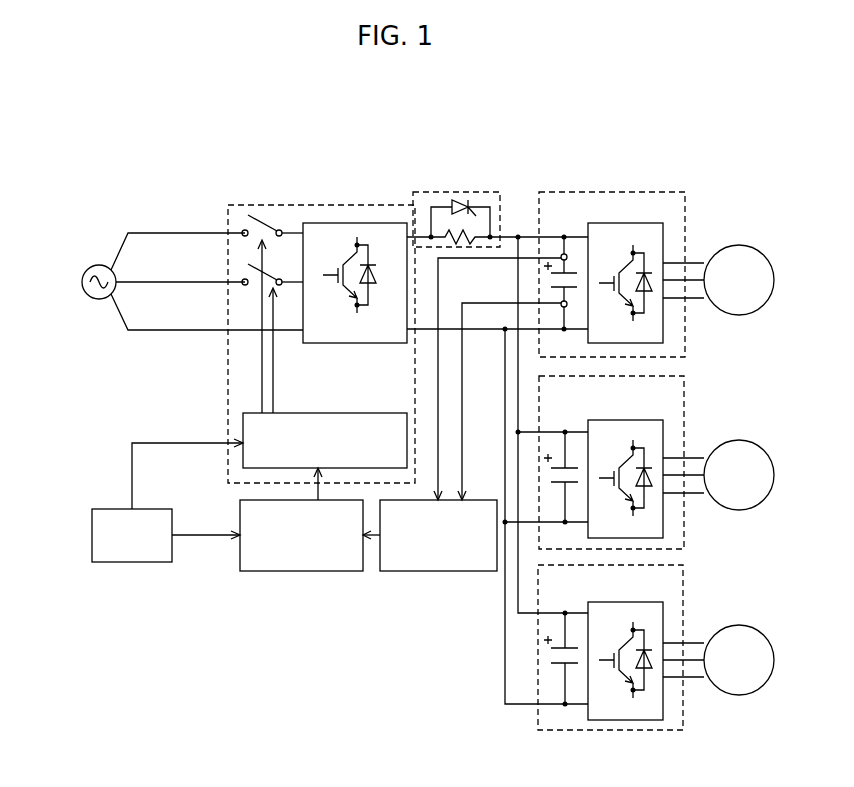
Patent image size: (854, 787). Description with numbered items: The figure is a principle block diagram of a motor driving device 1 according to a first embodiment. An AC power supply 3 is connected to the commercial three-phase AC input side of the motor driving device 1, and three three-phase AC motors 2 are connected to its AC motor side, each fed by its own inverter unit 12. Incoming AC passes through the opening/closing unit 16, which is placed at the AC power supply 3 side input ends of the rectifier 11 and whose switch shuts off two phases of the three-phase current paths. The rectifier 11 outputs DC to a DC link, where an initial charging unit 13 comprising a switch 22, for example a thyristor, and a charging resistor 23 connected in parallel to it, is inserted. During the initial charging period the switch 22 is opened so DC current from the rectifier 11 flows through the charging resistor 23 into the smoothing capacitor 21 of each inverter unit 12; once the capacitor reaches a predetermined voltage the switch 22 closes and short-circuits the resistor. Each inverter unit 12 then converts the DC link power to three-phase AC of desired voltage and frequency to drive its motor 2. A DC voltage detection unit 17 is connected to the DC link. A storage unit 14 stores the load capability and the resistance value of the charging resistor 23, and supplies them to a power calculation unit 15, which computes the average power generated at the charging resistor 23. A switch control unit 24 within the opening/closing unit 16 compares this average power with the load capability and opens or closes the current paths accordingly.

The motor driving device 1 is at (495, 135).
The three-phase AC motor 2 is at (741, 246).
The AC power supply 3 is at (96, 265).
The rectifier 11 is at (338, 223).
The inverter unit 12 is at (688, 191).
The initial charging unit 13 is at (500, 203).
The storage unit 14 is at (145, 562).
The power calculation unit 15 is at (313, 571).
The opening/closing unit 16 is at (228, 367).
The DC voltage detection unit 17 is at (425, 571).
The smoothing capacitor 21 is at (540, 283).
The switch 22 is at (462, 208).
The charging resistor 23 is at (447, 241).
The switch control unit 24 is at (243, 420).